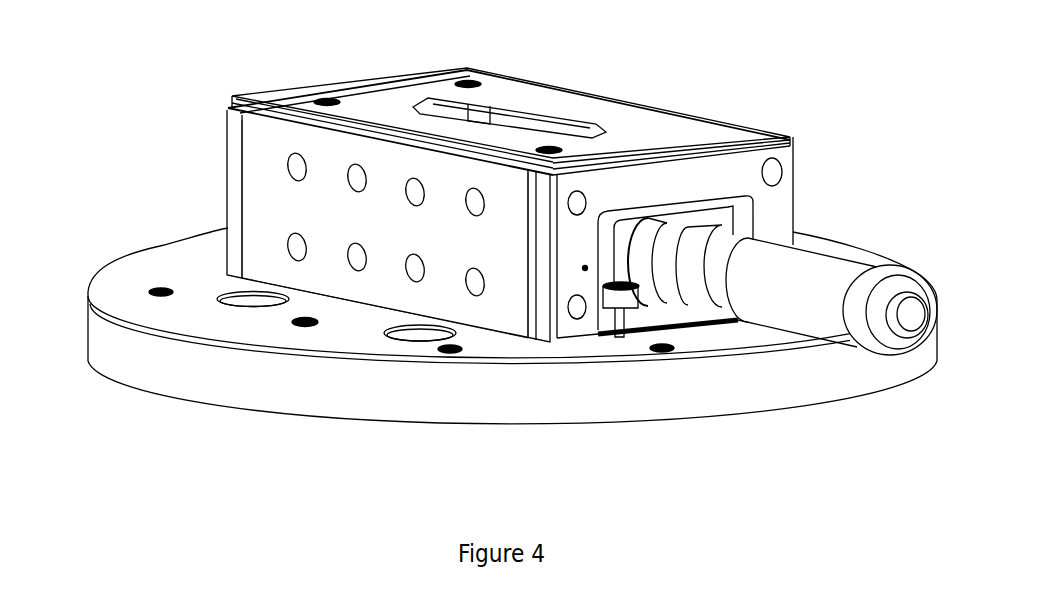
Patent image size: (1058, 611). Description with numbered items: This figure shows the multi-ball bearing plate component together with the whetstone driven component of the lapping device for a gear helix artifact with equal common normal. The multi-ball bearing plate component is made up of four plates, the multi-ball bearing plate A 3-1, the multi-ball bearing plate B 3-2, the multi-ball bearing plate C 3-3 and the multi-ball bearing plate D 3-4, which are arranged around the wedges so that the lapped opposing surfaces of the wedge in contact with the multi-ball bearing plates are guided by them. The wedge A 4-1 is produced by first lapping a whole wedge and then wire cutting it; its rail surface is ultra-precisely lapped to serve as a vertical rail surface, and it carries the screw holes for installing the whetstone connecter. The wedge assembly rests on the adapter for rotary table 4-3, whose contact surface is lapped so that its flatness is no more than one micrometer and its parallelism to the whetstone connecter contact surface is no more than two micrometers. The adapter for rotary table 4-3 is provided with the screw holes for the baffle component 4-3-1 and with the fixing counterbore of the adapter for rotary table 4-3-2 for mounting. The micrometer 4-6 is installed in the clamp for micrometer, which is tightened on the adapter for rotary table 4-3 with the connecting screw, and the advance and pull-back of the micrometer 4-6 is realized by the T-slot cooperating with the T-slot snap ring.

The multi-ball bearing plate A 3-1 is at (92, 452).
The multi-ball bearing plate B 3-2 is at (810, 452).
The multi-ball bearing plate C 3-3 is at (890, 213).
The multi-ball bearing plate D 3-4 is at (112, 138).
The wedge A 4-1 is at (112, 190).
The adapter for rotary table 4-3 is at (272, 452).
The screw holes for the baffle component 4-3-1 is at (192, 452).
The fixing counterbore of the adapter for rotary table 4-3-2 is at (690, 452).
The micrometer 4-6 is at (960, 452).